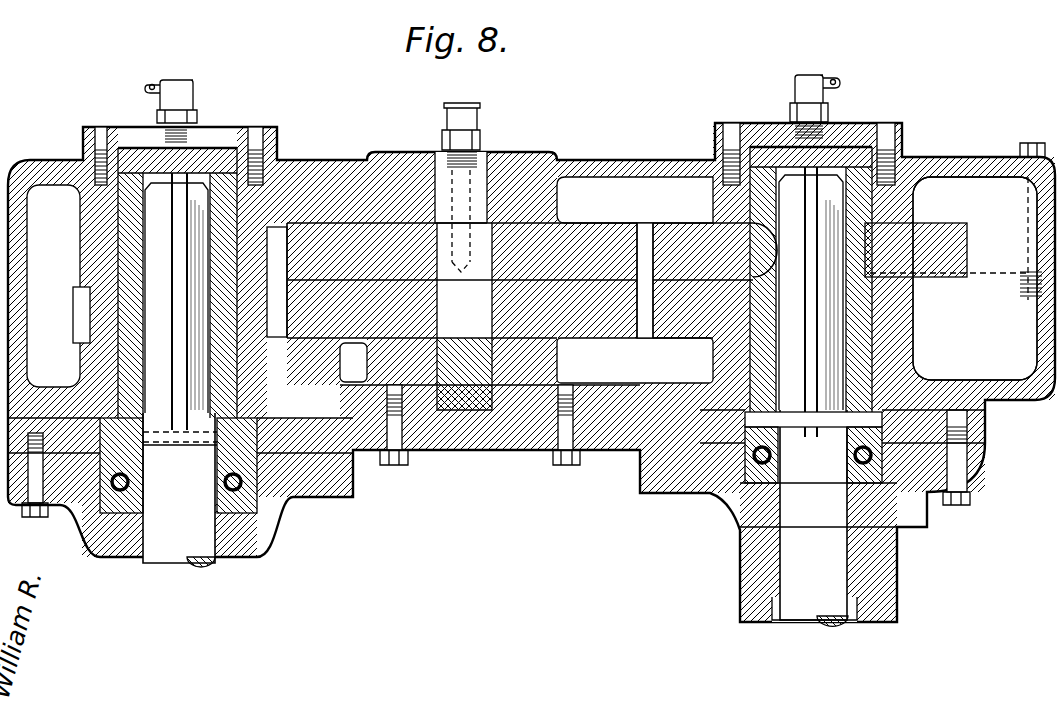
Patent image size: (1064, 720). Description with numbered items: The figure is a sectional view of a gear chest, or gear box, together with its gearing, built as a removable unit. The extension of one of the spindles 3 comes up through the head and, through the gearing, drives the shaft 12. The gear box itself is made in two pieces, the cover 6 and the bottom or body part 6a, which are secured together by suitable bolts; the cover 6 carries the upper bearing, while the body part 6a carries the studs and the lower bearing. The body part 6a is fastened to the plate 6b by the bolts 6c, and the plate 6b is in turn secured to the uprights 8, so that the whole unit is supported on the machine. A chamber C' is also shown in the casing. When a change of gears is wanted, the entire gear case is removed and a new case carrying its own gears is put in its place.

The spindle extension 3 is at (182, 548).
The shaft 12 is at (812, 600).
The uprights 8 is at (333, 489).
The gear box cover 6 is at (527, 157).
The body part 6a is at (537, 405).
The plate 6b is at (468, 440).
The bolts 6c is at (393, 465).
The chamber C' is at (957, 243).